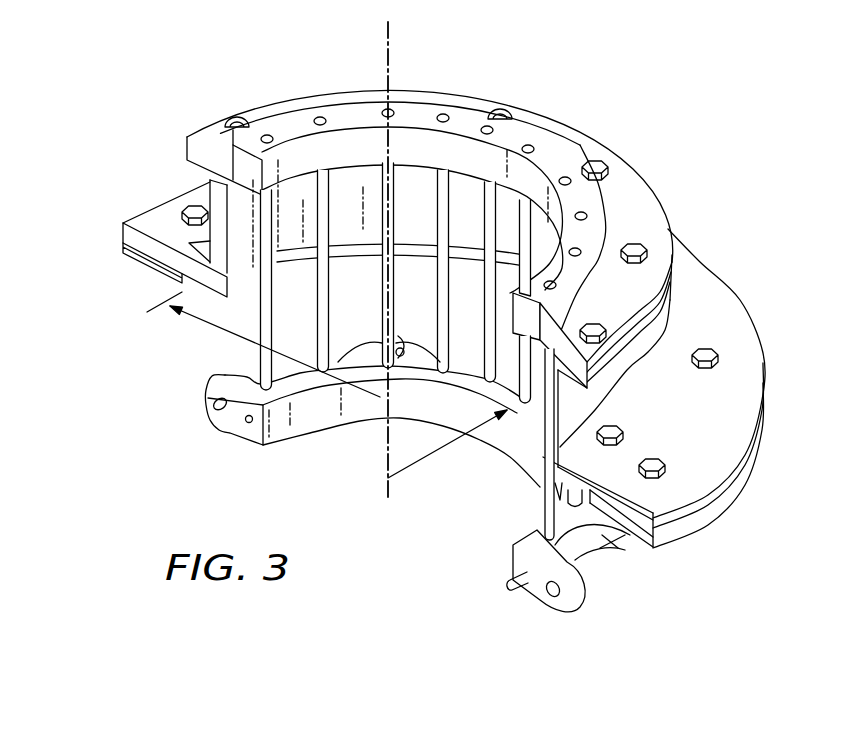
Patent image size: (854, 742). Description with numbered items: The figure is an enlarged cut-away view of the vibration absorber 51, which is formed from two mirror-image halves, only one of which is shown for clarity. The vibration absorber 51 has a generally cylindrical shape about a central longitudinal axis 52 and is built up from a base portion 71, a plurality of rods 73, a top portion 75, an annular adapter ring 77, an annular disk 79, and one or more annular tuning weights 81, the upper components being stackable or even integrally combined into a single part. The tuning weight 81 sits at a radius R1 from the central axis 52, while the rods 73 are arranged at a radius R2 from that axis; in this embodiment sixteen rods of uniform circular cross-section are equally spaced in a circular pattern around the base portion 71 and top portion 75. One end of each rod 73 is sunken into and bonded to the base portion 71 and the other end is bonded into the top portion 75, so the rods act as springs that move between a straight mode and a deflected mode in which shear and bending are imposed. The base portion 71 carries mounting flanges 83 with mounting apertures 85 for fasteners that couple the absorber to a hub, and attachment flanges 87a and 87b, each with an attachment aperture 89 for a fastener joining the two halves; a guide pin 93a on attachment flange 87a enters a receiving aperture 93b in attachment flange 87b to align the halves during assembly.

The vibration absorber 51 is at (680, 173).
The central longitudinal axis 52 is at (392, 35).
The base portion 71 is at (308, 420).
The rods 73 is at (258, 363).
The top portion 75 is at (290, 107).
The annular adapter ring 77 is at (188, 172).
The annular disk 79 is at (150, 215).
The annular tuning weights 81 is at (130, 248).
The mounting flanges 83 is at (348, 358).
The mounting apertures 85 is at (403, 348).
The attachment flange 87a is at (580, 606).
The attachment flange 87b is at (226, 432).
The attachment aperture 89 is at (208, 403).
The guide pin 93a is at (514, 566).
The receiving aperture 93b is at (249, 424).
The radius R1 is at (196, 312).
The radius R2 is at (434, 445).